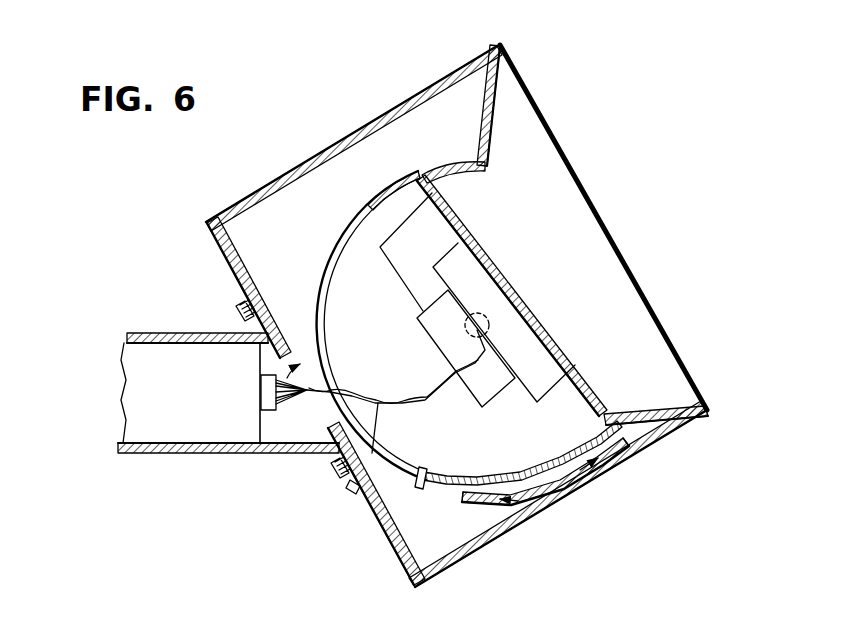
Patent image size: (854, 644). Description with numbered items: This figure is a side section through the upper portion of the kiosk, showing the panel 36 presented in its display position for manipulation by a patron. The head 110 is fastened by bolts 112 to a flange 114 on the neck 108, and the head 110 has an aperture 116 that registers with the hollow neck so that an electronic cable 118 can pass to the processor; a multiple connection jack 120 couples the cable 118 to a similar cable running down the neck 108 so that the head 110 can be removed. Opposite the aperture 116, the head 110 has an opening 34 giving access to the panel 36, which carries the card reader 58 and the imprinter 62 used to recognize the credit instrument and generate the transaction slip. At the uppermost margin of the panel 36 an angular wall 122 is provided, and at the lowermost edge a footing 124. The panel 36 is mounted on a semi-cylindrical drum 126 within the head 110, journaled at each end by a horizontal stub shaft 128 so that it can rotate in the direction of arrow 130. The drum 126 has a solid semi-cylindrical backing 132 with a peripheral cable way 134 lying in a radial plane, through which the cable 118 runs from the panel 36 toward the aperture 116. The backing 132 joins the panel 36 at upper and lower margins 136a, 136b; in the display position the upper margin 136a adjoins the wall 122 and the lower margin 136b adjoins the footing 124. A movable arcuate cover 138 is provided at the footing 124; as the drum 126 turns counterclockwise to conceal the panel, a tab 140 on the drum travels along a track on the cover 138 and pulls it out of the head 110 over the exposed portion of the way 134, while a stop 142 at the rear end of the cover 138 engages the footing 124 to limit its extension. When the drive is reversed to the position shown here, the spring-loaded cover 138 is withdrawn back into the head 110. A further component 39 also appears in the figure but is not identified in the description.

The opening 34 is at (600, 205).
The panel 36 is at (547, 352).
The sensor block 39 is at (495, 306).
The card reader 58 is at (426, 259).
The imprinter 62 is at (496, 390).
The neck 108 is at (167, 333).
The head 110 is at (273, 190).
The bolts 112 is at (243, 302).
The flange 114 is at (352, 484).
The aperture 116 is at (268, 411).
The electronic cable 118 is at (372, 453).
The multiple connection jack 120 is at (303, 400).
The angular wall 122 is at (493, 98).
The footing 124 is at (660, 404).
The semi-cylindrical drum 126 is at (395, 174).
The stub shaft 128 is at (477, 325).
The arrow 130 is at (546, 497).
The semi-cylindrical backing 132 is at (416, 493).
The peripheral cable way 134 is at (338, 243).
The upper margin 136a is at (432, 181).
The lower margin 136b is at (603, 405).
The arcuate cover 138 is at (610, 443).
The tab 140 is at (416, 486).
The stop 142 is at (463, 506).